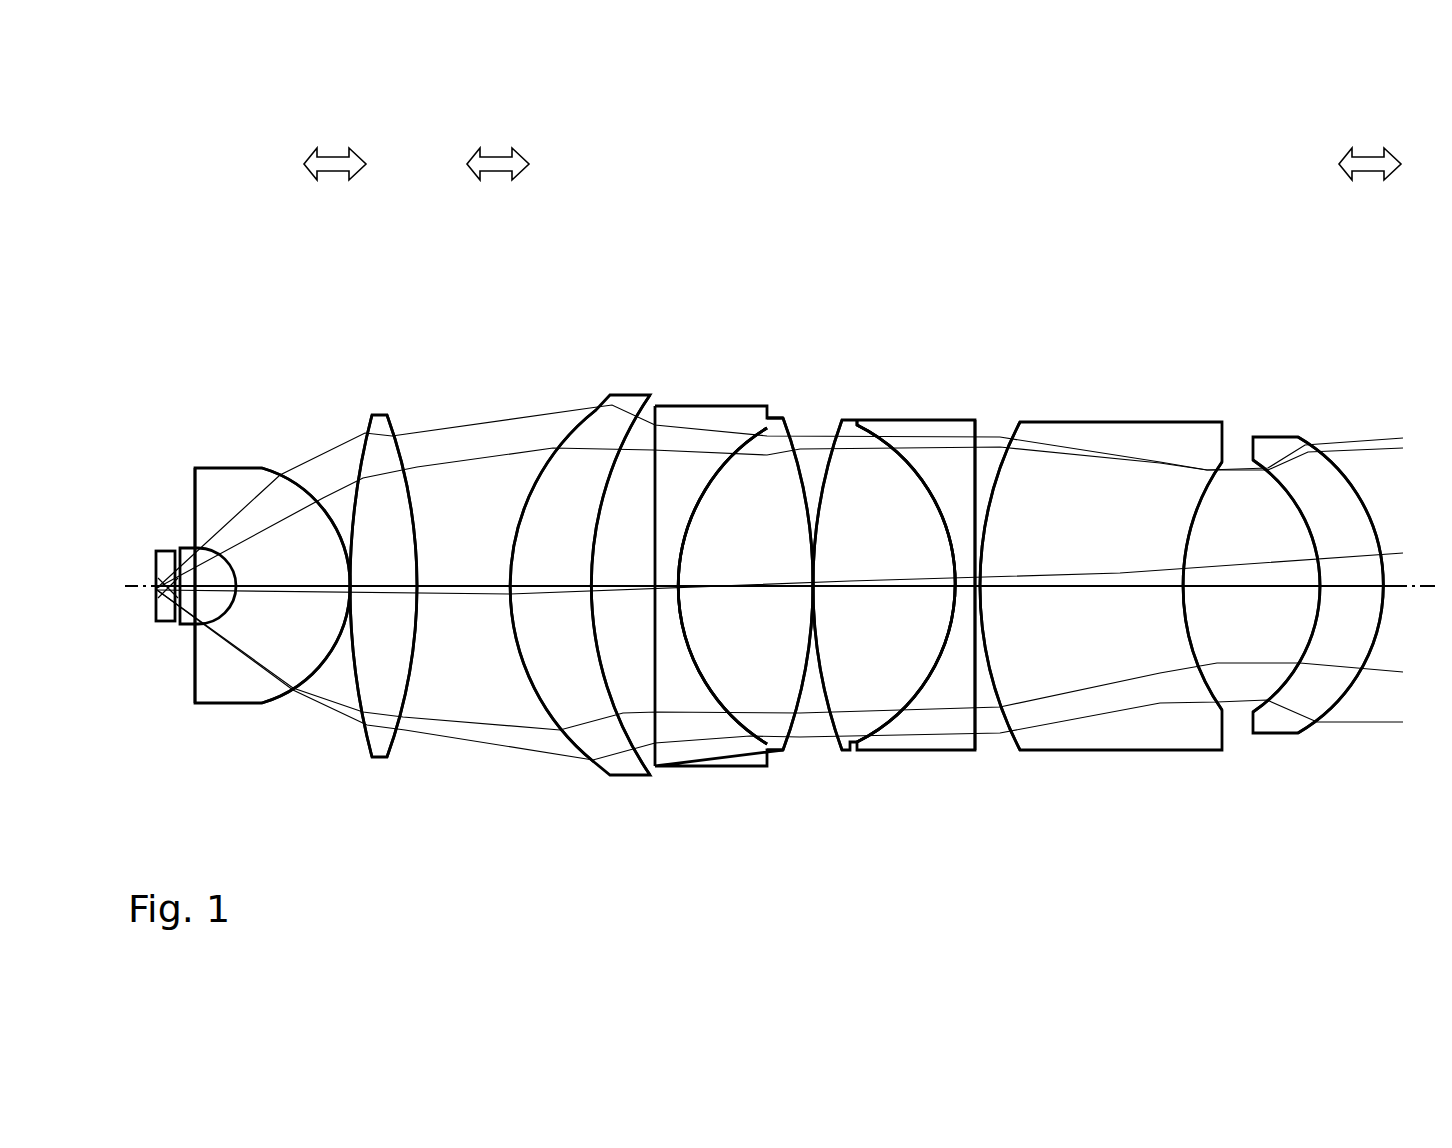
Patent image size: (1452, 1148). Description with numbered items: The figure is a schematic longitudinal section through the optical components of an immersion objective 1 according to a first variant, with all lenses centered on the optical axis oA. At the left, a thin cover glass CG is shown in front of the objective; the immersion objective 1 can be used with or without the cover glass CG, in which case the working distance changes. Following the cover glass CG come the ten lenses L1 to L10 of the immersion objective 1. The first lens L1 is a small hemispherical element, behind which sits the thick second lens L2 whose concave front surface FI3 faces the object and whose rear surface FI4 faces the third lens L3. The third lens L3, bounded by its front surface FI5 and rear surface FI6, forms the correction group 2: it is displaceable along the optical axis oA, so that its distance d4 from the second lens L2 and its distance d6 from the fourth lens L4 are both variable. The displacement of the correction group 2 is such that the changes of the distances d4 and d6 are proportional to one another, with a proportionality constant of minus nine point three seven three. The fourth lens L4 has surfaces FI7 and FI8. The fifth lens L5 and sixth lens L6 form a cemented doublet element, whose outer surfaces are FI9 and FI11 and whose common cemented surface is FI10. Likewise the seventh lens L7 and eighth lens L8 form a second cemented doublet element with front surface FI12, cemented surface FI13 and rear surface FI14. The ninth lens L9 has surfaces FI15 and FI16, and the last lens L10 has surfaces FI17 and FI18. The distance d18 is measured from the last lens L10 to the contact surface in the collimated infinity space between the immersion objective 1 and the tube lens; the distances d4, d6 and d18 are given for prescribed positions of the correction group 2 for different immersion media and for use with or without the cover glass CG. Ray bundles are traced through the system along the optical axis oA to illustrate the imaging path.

The immersion objective 1 is at (775, 200).
The correction group 2 is at (398, 214).
The cover glass CG is at (177, 576).
The first lens L1 is at (183, 616).
The second lens L2 is at (238, 690).
The third lens L3 is at (379, 745).
The fourth lens L4 is at (627, 760).
The fifth lens L5 is at (713, 753).
The sixth lens L6 is at (775, 738).
The seventh lens L7 is at (850, 742).
The eighth lens L8 is at (925, 740).
The ninth lens L9 is at (1118, 740).
The tenth lens L10 is at (1280, 723).
The front surface of second lens FI3 is at (200, 548).
The rear surface of second lens FI4 is at (282, 472).
The front surface of third lens FI5 is at (372, 432).
The rear surface of third lens FI6 is at (394, 432).
The front surface of fourth lens FI7 is at (570, 433).
The rear surface of fourth lens FI8 is at (638, 427).
The front surface of fifth lens FI9 is at (652, 487).
The cemented surface between fifth and sixth lenses FI10 is at (722, 480).
The rear surface of sixth lens FI11 is at (805, 485).
The front surface of seventh lens FI12 is at (836, 462).
The cemented surface between seventh and eighth lenses FI13 is at (946, 530).
The rear surface of eighth lens FI14 is at (978, 495).
The front surface of ninth lens FI15 is at (1003, 462).
The rear surface of ninth lens FI16 is at (1216, 478).
The front surface of tenth lens FI17 is at (1304, 530).
The rear surface of tenth lens FI18 is at (1367, 507).
The distance between second and third lenses d4 is at (333, 445).
The distance between third and fourth lenses d6 is at (497, 443).
The distance between last lens and contact surface d18 is at (1370, 465).
The optical axis oA is at (1430, 590).